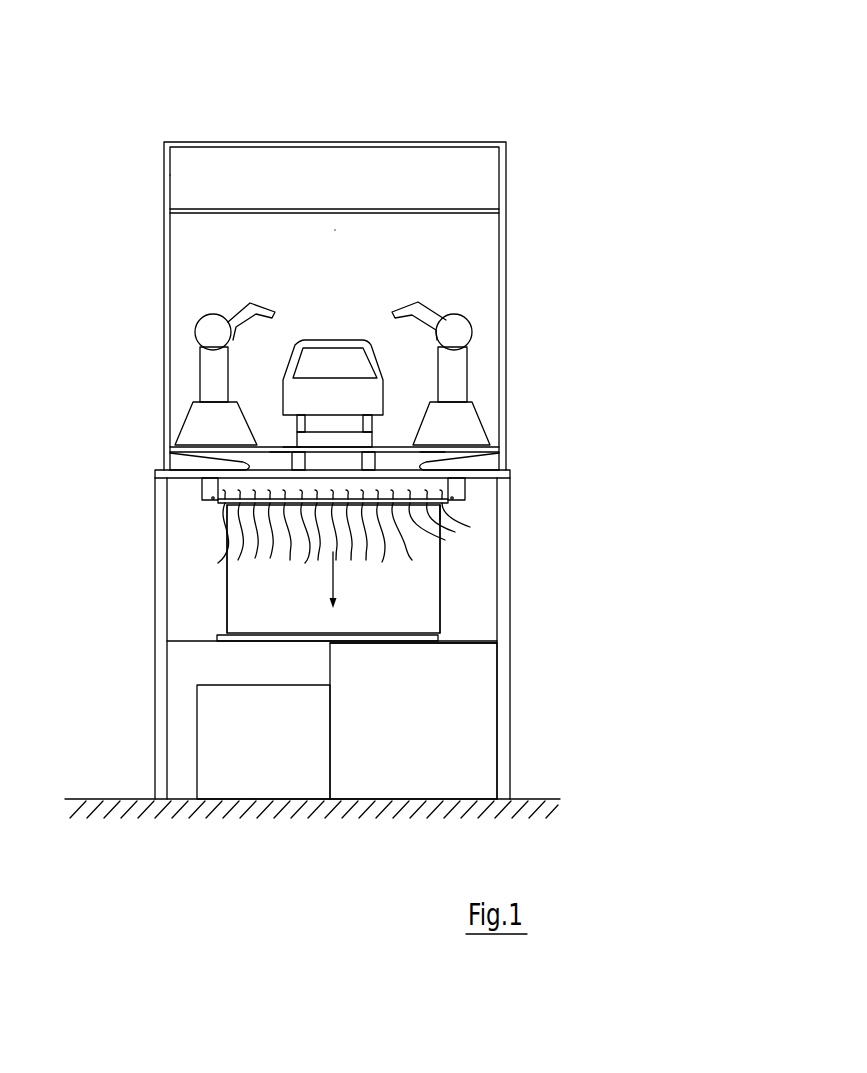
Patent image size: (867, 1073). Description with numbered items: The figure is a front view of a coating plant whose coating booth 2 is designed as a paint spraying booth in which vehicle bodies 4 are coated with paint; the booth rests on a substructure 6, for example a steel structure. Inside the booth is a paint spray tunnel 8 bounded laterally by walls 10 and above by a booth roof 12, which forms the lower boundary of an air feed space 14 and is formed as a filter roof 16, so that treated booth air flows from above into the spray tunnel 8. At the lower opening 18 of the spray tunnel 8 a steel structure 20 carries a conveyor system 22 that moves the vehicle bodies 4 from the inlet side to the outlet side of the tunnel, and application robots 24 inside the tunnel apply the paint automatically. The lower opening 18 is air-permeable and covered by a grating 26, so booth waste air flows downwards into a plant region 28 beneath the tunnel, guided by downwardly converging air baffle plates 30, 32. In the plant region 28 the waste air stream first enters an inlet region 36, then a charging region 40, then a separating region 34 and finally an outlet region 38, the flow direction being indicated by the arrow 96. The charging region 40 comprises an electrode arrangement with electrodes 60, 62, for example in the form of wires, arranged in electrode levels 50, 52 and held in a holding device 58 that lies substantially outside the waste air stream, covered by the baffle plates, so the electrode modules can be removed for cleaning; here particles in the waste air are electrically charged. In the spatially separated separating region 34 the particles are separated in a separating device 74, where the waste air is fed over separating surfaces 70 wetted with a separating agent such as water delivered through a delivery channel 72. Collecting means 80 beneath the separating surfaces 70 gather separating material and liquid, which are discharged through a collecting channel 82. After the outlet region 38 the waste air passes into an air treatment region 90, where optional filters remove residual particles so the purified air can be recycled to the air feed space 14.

The coating booth 2 is at (628, 85).
The vehicle bodies 4 is at (346, 343).
The substructure 6 is at (513, 453).
The paint spray tunnel 8 is at (333, 270).
The walls 10 is at (163, 373).
The booth roof 12 is at (388, 200).
The air feed space 14 is at (340, 168).
The filter roof 16 is at (257, 210).
The lower opening 18 is at (181, 437).
The steel structure 20 is at (289, 432).
The conveyor system 22 is at (378, 425).
The application robots 24 is at (190, 353).
The grating 26 is at (284, 435).
The plant region 28 is at (585, 584).
The air baffle plate 30 is at (278, 451).
The air baffle plate 32 is at (433, 451).
The separating region 34 is at (145, 572).
The inlet region 36 is at (145, 475).
The outlet region 38 is at (145, 620).
The charging region 40 is at (145, 492).
The electrode level 50 is at (368, 487).
The electrode level 52 is at (216, 510).
The holding device 58 is at (465, 493).
The electrodes 60 is at (345, 536).
The electrodes 62 is at (445, 504).
The separating surfaces 70 is at (363, 603).
The delivery channel 72 is at (417, 508).
The separating device 74 is at (463, 590).
The collecting means 80 is at (320, 640).
The collecting channel 82 is at (453, 645).
The air treatment region 90 is at (533, 697).
The arrow 96 is at (333, 592).